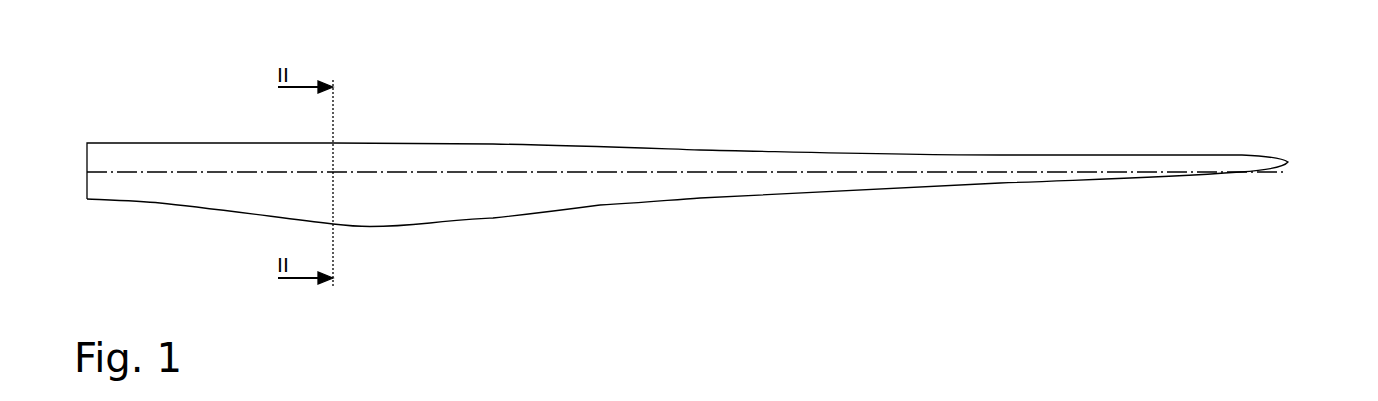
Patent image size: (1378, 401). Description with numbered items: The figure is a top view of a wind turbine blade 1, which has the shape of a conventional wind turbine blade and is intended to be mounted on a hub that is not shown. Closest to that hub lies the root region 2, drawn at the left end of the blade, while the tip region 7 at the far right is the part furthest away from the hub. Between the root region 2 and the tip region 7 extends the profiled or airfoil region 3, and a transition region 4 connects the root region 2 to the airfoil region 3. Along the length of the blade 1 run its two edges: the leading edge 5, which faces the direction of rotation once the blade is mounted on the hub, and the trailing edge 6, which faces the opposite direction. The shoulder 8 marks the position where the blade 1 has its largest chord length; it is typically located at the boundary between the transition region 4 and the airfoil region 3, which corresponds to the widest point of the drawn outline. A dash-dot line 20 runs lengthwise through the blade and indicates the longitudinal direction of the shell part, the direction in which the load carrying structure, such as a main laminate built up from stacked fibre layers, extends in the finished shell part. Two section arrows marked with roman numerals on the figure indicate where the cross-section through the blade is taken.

The wind turbine blade 1 is at (821, 68).
The root region 2 is at (149, 152).
The airfoil region 3 is at (670, 202).
The transition region 4 is at (225, 210).
The leading edge 5 is at (497, 144).
The trailing edge 6 is at (500, 218).
The tip region 7 is at (1242, 156).
The shoulder 8 is at (372, 227).
The line indicating longitudinal direction 20 is at (603, 172).